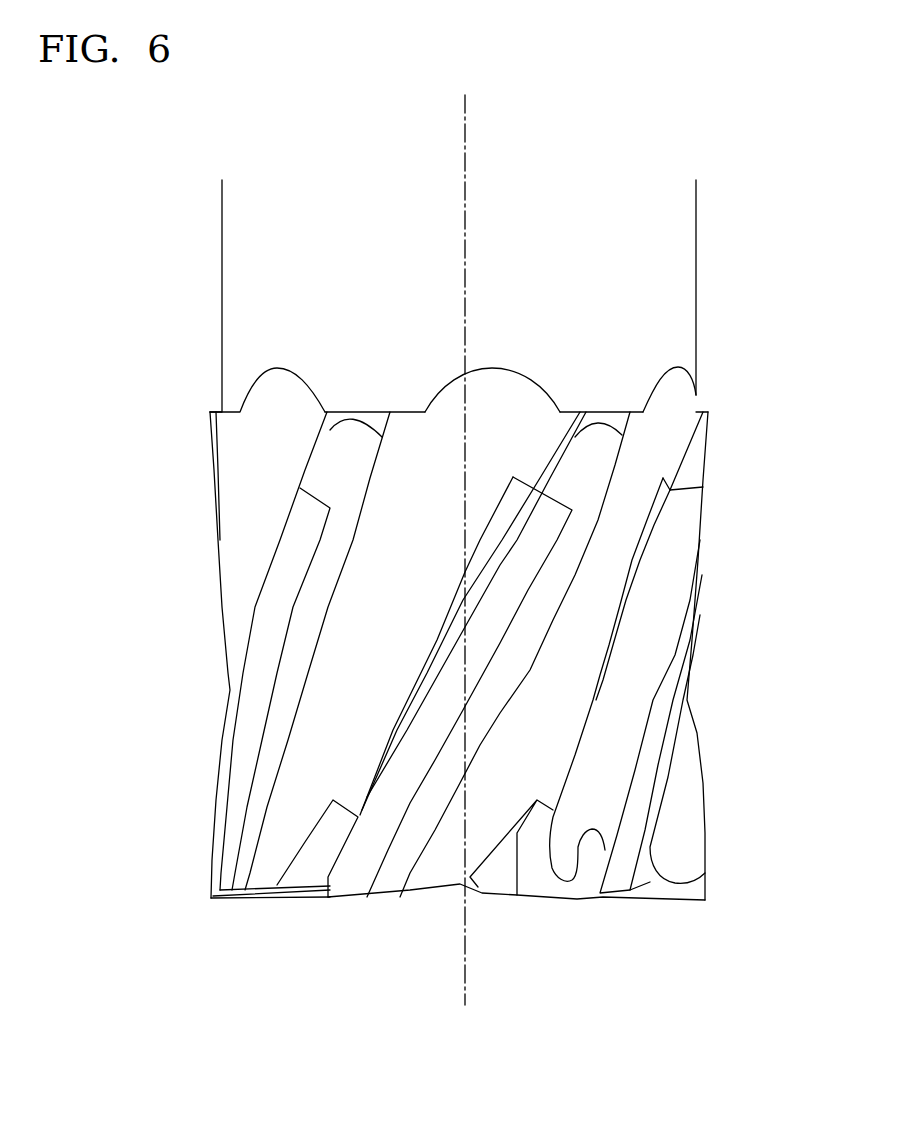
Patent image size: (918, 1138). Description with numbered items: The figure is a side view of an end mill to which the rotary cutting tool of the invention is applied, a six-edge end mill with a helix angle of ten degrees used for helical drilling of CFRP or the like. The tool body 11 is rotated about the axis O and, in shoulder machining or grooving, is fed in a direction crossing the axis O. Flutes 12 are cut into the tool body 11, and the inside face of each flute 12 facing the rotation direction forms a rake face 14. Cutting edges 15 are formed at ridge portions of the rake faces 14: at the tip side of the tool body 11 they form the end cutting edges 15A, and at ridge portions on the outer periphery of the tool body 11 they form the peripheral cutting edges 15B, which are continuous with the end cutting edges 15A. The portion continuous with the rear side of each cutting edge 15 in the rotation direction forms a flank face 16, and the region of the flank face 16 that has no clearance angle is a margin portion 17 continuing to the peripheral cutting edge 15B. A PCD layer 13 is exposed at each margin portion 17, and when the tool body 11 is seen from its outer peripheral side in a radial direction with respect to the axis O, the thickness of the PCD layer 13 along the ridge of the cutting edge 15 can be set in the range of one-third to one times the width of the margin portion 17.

The axis O is at (465, 125).
The tool body 11 is at (160, 208).
The flute 12 is at (250, 472).
The PCD layer 13 is at (225, 785).
The rake face 14 is at (625, 719).
The cutting edge 15 is at (68, 845).
The end cutting edge 15A is at (240, 900).
The peripheral cutting edge 15B is at (210, 855).
The flank face 16 is at (263, 860).
The margin portion 17 is at (282, 653).